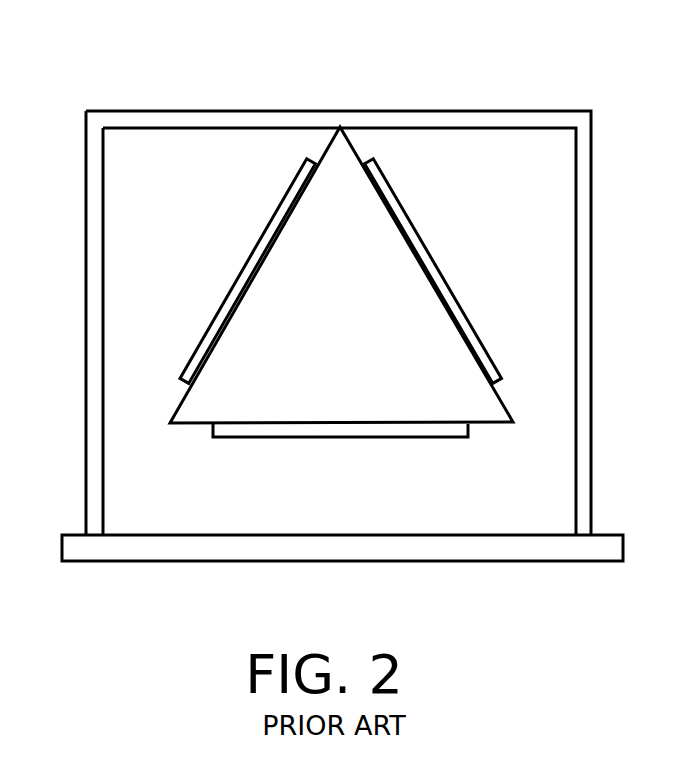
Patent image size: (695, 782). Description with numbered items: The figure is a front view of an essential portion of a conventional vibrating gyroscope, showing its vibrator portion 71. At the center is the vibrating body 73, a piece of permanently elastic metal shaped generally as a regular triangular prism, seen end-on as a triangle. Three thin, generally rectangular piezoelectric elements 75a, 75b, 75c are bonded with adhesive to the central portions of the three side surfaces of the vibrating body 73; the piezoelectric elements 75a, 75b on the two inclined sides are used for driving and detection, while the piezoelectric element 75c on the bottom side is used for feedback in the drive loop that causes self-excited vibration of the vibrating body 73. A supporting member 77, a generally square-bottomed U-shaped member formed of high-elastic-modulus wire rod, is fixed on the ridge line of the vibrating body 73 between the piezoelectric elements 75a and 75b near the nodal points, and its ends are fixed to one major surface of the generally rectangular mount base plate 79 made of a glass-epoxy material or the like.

The vibrator portion 71 is at (62, 48).
The vibrating body 73 is at (213, 390).
The piezoelectric element 75a is at (237, 275).
The piezoelectric element 75b is at (447, 272).
The piezoelectric element 75c is at (342, 437).
The supporting member 77 is at (592, 208).
The mount base plate 79 is at (183, 563).